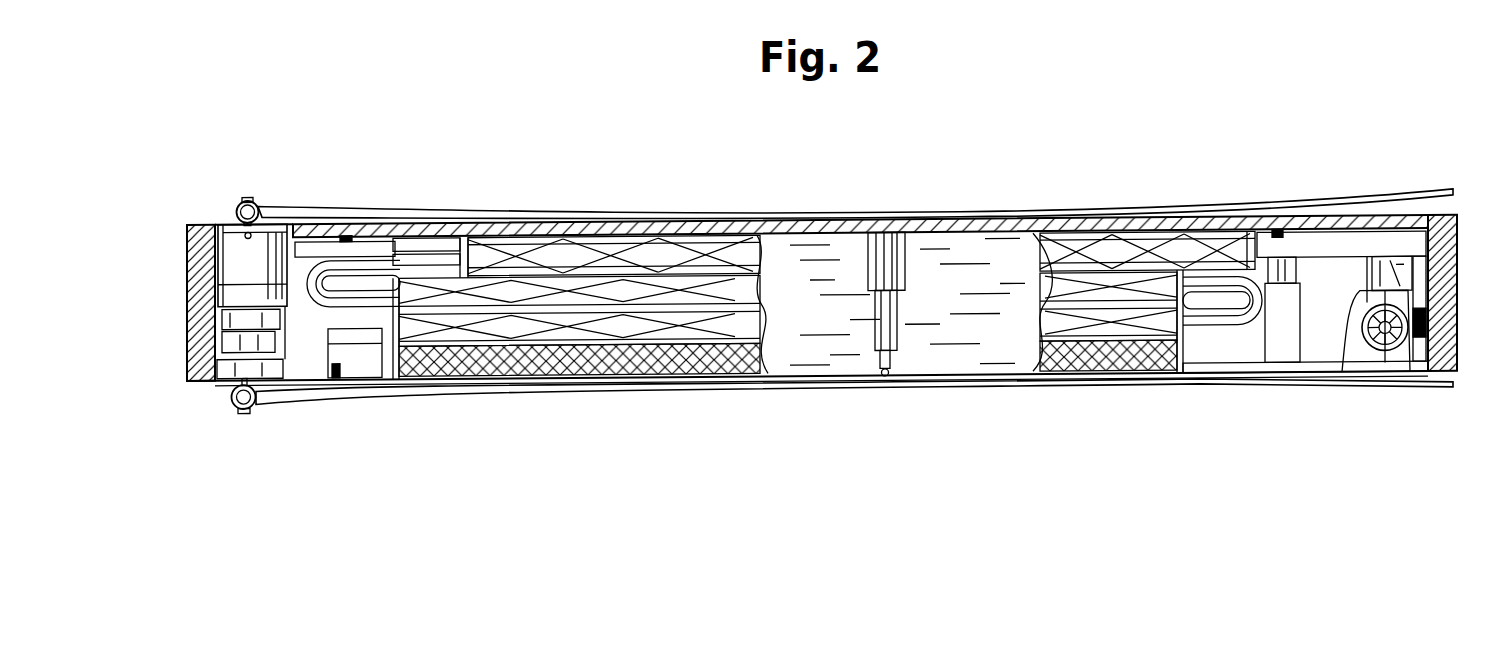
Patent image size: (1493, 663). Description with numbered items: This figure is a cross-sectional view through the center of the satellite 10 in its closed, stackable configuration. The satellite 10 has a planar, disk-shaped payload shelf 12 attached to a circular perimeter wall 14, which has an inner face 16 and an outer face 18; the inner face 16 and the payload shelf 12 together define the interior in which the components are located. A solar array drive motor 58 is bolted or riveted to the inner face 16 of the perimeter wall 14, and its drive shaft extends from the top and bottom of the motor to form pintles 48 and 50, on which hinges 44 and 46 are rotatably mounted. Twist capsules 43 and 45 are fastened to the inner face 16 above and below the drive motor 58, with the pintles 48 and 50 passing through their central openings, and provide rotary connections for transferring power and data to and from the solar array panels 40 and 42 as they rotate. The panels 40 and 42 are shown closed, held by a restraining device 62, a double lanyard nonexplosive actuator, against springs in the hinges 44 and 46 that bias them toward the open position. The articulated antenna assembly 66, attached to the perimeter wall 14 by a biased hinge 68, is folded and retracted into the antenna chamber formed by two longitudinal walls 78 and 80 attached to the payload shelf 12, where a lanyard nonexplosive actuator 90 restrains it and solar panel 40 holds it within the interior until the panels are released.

The satellite 10 is at (896, 412).
The payload shelf 12 is at (607, 223).
The perimeter wall 14 is at (170, 281).
The inner face 16 is at (216, 325).
The outer face 18 is at (187, 248).
The solar array panel 40 is at (1368, 342).
The solar array panel 42 is at (1333, 198).
The twist capsule 43 is at (257, 233).
The hinge 44 is at (236, 198).
The twist capsule 45 is at (195, 383).
The hinge 46 is at (237, 412).
The pintle 48 is at (233, 226).
The pintle 50 is at (241, 383).
The solar array drive motor 58 is at (235, 258).
The restraining device 62 is at (893, 258).
The articulated antenna assembly 66 is at (620, 382).
The hinge 68 is at (1352, 372).
The longitudinal wall 78 is at (320, 360).
The longitudinal wall 80 is at (992, 364).
The lanyard nonexplosive actuator 90 is at (1288, 347).